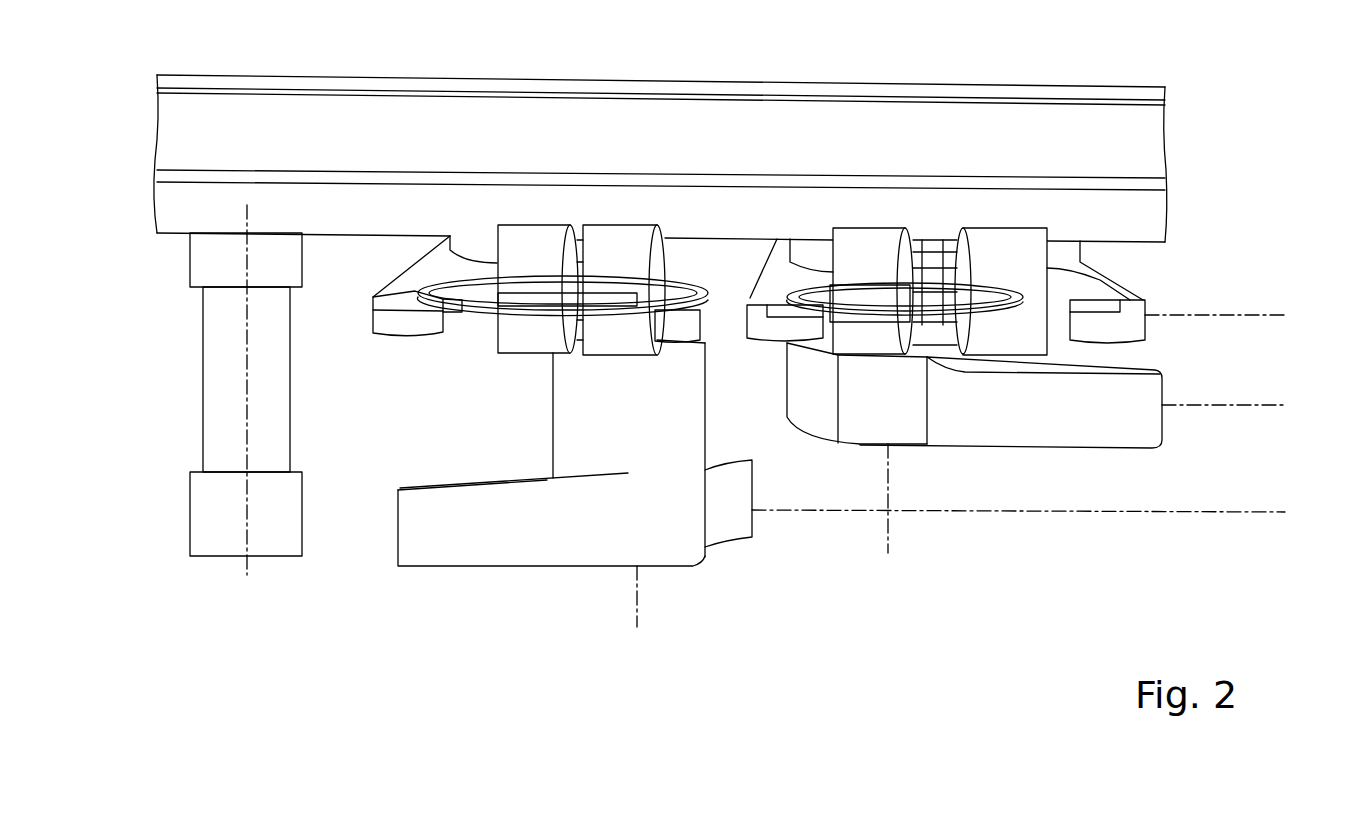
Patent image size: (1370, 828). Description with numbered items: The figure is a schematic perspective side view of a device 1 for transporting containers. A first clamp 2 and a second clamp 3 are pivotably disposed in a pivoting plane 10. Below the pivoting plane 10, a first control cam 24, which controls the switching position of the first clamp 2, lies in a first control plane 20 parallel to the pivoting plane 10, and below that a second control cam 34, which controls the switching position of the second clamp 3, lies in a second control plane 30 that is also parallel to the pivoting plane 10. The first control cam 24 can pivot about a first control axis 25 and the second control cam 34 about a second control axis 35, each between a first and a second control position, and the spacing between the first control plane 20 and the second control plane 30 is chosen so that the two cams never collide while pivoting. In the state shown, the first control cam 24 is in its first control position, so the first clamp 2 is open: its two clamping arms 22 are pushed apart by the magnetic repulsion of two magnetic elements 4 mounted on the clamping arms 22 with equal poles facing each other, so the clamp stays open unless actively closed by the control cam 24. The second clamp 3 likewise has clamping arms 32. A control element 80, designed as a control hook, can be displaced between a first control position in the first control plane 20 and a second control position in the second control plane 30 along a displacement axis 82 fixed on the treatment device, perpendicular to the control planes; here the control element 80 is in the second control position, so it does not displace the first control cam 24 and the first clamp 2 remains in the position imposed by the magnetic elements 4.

The device for transporting containers 1 is at (360, 630).
The first clamp 2 is at (1002, 401).
The second clamp 3 is at (558, 442).
The magnetic elements 4 is at (625, 248).
The pivoting plane 10 is at (1253, 312).
The first control plane 20 is at (1253, 405).
The clamping arms 22 is at (1090, 280).
The first control cam 24 is at (1086, 420).
The first control axis 25 is at (888, 537).
The second control plane 30 is at (1253, 508).
The clamping arms 32 is at (395, 325).
The second control cam 34 is at (487, 545).
The second control axis 35 is at (637, 608).
The control element 80 is at (216, 535).
The displacement axis 82 is at (250, 214).